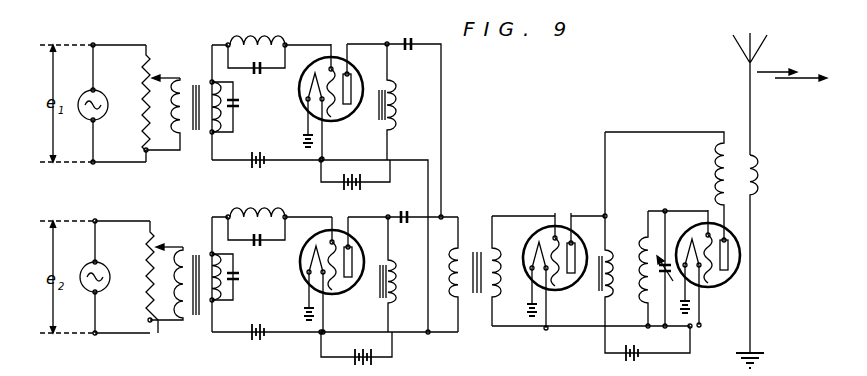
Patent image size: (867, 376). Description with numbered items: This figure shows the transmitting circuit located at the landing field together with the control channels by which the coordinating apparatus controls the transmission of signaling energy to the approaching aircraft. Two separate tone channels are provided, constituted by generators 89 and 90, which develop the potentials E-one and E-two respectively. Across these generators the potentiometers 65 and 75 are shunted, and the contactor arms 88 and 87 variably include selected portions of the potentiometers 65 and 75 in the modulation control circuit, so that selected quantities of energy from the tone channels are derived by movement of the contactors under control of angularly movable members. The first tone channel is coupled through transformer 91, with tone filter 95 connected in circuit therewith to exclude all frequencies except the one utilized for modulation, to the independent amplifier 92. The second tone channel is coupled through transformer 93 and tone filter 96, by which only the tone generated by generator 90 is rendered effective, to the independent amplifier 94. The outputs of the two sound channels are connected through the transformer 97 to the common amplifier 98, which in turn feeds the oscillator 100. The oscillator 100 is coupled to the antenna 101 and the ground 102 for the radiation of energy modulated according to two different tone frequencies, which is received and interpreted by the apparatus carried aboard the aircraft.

The potentiometer 65 is at (144, 100).
The potentiometer 75 is at (142, 273).
The contactor arm 87 is at (168, 235).
The contactor arm 88 is at (167, 68).
The tone frequency generator 89 is at (89, 88).
The tone channel generator 90 is at (89, 263).
The transformer 91 is at (172, 90).
The amplifier 92 is at (299, 93).
The transformer 93 is at (203, 231).
The amplifier 94 is at (300, 268).
The tone filter 95 is at (265, 52).
The tone filter 96 is at (273, 218).
The transformer 97 is at (477, 234).
The common amplifier 98 is at (566, 212).
The oscillator 100 is at (701, 226).
The antenna 101 is at (742, 93).
The ground 102 is at (755, 352).